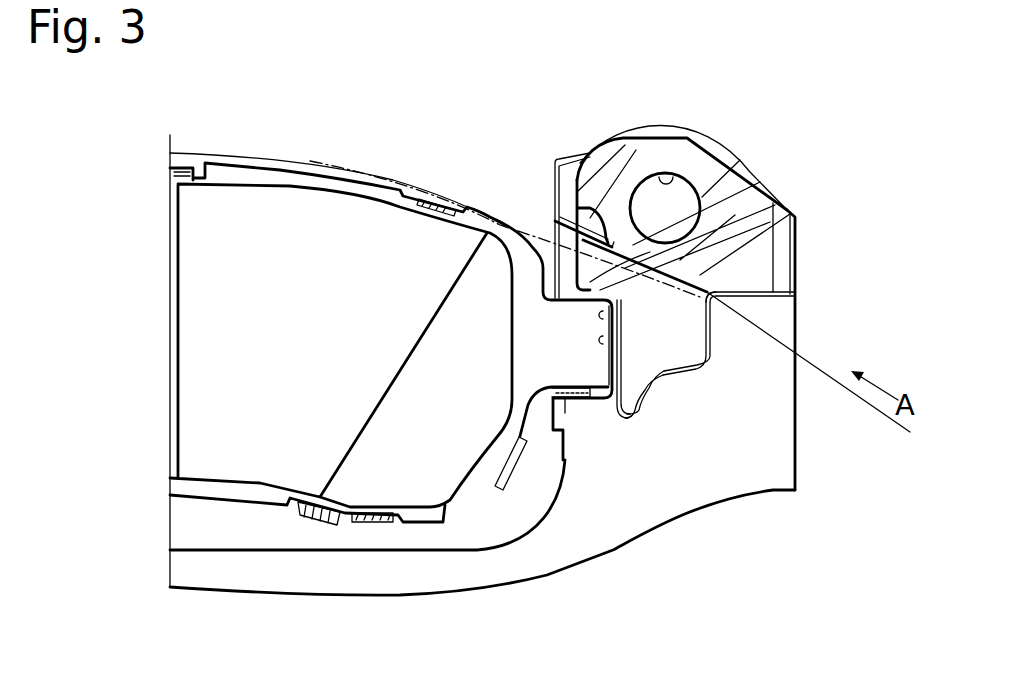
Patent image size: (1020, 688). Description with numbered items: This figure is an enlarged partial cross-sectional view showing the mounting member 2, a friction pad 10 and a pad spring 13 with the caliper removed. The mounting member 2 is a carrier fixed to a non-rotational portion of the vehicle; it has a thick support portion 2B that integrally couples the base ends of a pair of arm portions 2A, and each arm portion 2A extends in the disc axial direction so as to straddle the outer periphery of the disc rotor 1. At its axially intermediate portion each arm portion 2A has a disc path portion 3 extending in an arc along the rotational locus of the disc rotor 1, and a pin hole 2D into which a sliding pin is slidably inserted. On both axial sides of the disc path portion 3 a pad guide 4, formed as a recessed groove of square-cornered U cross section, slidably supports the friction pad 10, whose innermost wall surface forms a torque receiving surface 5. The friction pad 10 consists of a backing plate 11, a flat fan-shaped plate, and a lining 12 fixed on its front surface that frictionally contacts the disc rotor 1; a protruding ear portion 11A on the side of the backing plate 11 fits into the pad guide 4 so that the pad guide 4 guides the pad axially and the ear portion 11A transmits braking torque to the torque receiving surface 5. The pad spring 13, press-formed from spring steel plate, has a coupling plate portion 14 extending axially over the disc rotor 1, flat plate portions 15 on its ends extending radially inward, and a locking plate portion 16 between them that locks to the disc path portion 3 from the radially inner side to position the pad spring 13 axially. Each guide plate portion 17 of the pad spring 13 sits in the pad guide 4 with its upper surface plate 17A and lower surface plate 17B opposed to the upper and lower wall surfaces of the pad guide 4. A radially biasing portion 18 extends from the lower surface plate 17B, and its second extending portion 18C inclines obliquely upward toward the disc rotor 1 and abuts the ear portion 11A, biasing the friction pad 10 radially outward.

The disc rotor 1 is at (391, 180).
The mounting member 2 is at (560, 590).
The arm portion 2A is at (723, 213).
The support portion 2B is at (257, 587).
The pin hole 2D is at (667, 176).
The disc path portion 3 is at (690, 286).
The pad guide 4 is at (642, 376).
The torque receiving surface 5 is at (613, 318).
The friction pad 10 is at (160, 370).
The backing plate 11 is at (445, 513).
The ear portion 11A is at (593, 402).
The lining 12 is at (285, 233).
The pad spring 13 is at (626, 345).
The coupling plate portion 14 is at (573, 157).
The flat plate portion 15 is at (553, 256).
The locking plate portion 16 is at (585, 192).
The guide plate portion 17 is at (627, 418).
The upper surface plate 17A is at (690, 240).
The lower surface plate 17B is at (577, 402).
The radially biasing portion 18 is at (617, 511).
The second extending portion 18C is at (567, 402).